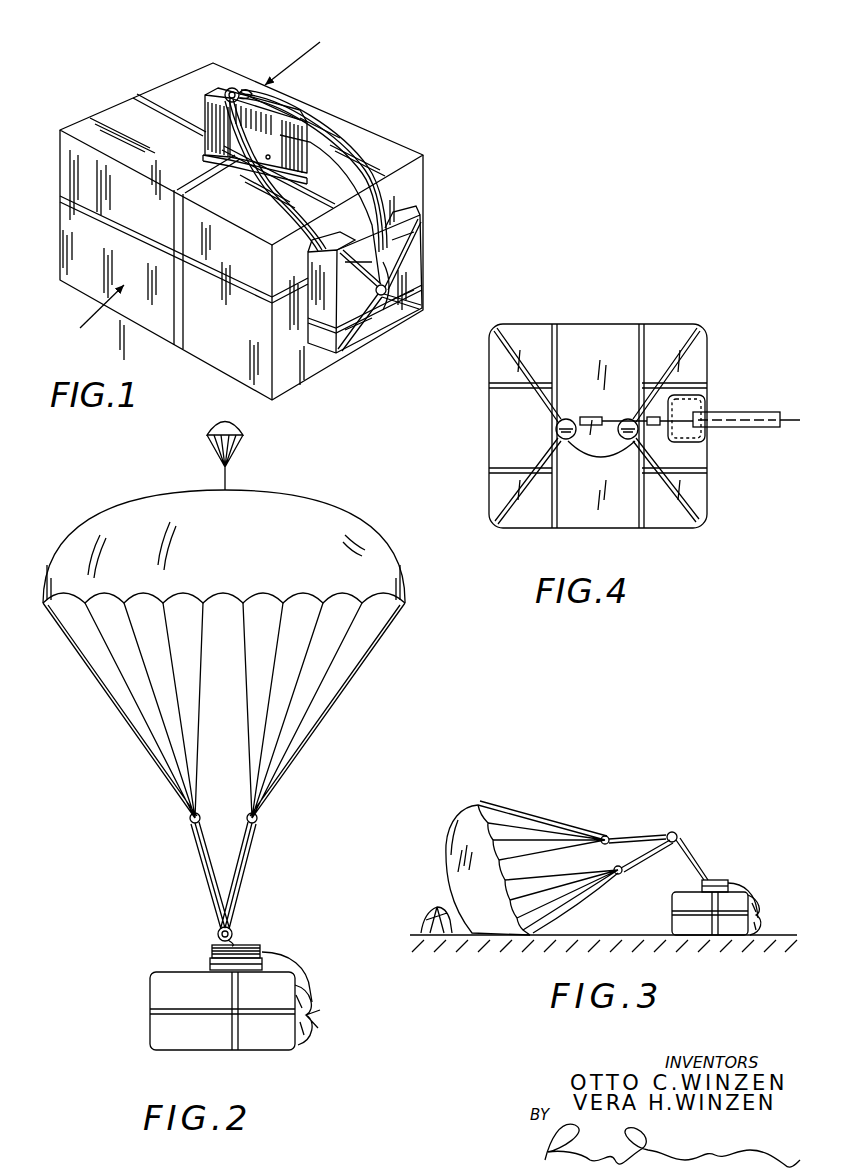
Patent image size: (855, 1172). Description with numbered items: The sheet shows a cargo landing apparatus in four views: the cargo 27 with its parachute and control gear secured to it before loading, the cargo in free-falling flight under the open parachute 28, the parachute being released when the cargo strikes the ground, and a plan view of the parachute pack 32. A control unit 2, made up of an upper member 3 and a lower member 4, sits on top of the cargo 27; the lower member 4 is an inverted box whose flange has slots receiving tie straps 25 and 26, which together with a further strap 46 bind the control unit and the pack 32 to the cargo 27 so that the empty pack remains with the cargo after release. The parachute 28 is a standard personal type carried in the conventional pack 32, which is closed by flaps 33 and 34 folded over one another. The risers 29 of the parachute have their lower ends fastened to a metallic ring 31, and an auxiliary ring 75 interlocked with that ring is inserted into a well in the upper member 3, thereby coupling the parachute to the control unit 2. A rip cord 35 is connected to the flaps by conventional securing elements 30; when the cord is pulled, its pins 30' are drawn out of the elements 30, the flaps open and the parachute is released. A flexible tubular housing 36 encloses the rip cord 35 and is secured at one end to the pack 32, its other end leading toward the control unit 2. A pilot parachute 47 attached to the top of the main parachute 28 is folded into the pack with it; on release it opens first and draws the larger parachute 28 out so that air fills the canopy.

In FIG. 1, the control unit 2 is at (220, 82).
In FIG. 2, the control unit 2 is at (266, 948).
In FIG. 3, the control unit 2 is at (716, 880).
In FIG. 1, the upper member 3 is at (207, 118).
In FIG. 2, the upper member 3 is at (212, 948).
In FIG. 3, the upper member 3 is at (704, 882).
In FIG. 1, the lower member 4 is at (203, 130).
In FIG. 2, the lower member 4 is at (210, 964).
In FIG. 3, the lower member 4 is at (702, 888).
In FIG. 1, the tie strap 25 is at (150, 98).
In FIG. 1, the tie strap 26 is at (174, 219).
In FIG. 2, the tie strap 26 is at (238, 1030).
In FIG. 3, the tie strap 26 is at (717, 935).
In FIG. 1, the cargo 27 is at (362, 118).
In FIG. 2, the cargo 27 is at (148, 984).
In FIG. 3, the cargo 27 is at (670, 920).
In FIG. 2, the parachute 28 is at (357, 508).
In FIG. 3, the parachute 28 is at (468, 810).
In FIG. 1, the risers 29 is at (342, 148).
In FIG. 2, the risers 29 is at (205, 858).
In FIG. 3, the risers 29 is at (643, 853).
In FIG. 4, the securing elements 30 is at (605, 433).
In FIG. 4, the pins 30' is at (583, 440).
In FIG. 1, the metallic ring 31 is at (226, 88).
In FIG. 2, the metallic ring 31 is at (219, 933).
In FIG. 3, the metallic ring 31 is at (674, 830).
In FIG. 1, the pack 32 is at (322, 342).
In FIG. 2, the pack 32 is at (312, 1016).
In FIG. 3, the pack 32 is at (762, 915).
In FIG. 4, the pack 32 is at (506, 532).
In FIG. 1, the flaps 33 is at (402, 276).
In FIG. 4, the flaps 33 is at (590, 358).
In FIG. 1, the flaps 34 is at (392, 258).
In FIG. 4, the flaps 34 is at (527, 434).
In FIG. 1, the rip cord 35 is at (376, 290).
In FIG. 4, the rip cord 35 is at (690, 413).
In FIG. 1, the flexible tubular housing 36 is at (373, 220).
In FIG. 2, the flexible tubular housing 36 is at (294, 957).
In FIG. 3, the flexible tubular housing 36 is at (740, 882).
In FIG. 4, the flexible tubular housing 36 is at (765, 412).
In FIG. 1, the strap 46 is at (243, 305).
In FIG. 2, the strap 46 is at (160, 1013).
In FIG. 3, the strap 46 is at (680, 910).
In FIG. 2, the pilot parachute 47 is at (206, 430).
In FIG. 3, the pilot parachute 47 is at (416, 930).
In FIG. 1, the auxiliary ring 75 is at (247, 92).
In FIG. 2, the auxiliary ring 75 is at (232, 943).
In FIG. 3, the auxiliary ring 75 is at (682, 836).